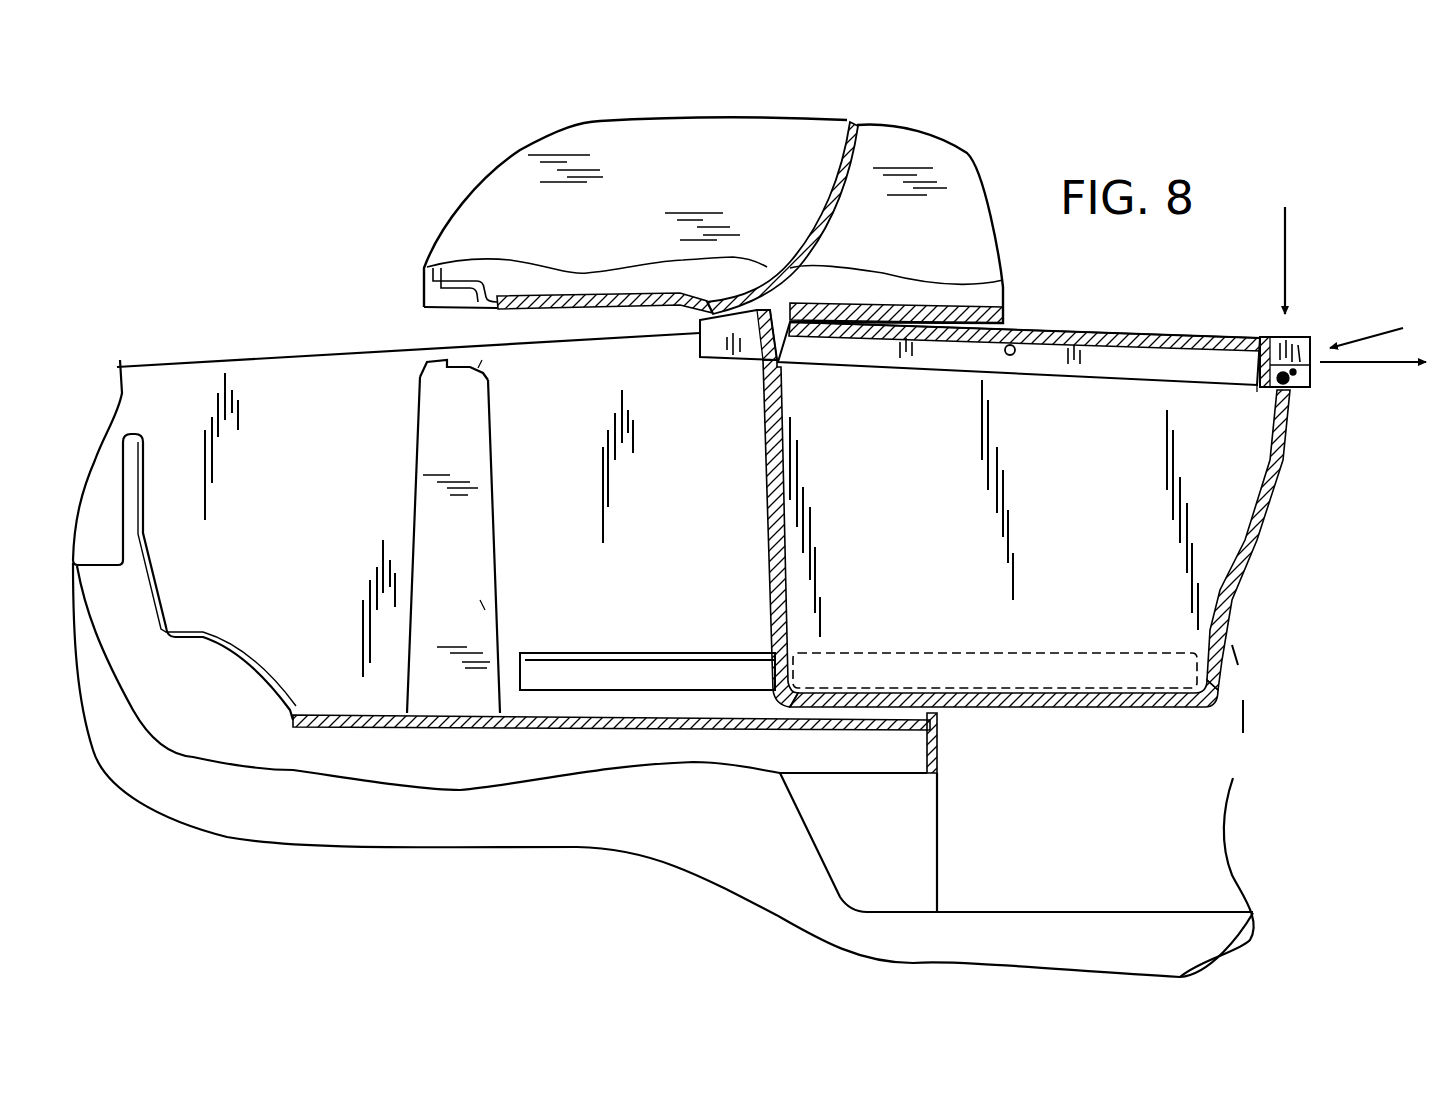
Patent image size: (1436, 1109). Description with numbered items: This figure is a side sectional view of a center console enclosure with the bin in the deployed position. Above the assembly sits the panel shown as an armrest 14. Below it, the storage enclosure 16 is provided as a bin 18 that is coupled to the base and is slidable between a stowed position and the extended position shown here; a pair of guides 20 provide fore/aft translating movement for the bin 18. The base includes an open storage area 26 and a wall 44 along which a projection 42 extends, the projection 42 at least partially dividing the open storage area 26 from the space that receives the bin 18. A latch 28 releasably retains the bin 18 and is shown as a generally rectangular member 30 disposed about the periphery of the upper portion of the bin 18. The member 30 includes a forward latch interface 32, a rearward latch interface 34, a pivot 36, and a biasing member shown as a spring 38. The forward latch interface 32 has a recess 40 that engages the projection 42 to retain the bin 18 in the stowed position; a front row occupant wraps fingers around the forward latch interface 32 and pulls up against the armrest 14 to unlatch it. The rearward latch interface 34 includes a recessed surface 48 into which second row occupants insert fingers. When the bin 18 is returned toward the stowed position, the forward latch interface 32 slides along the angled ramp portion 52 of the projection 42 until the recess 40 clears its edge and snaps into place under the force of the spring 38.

The armrest 14 is at (560, 124).
The storage enclosure 16 is at (1264, 632).
The bin 18 is at (1240, 575).
The guides 20 is at (597, 653).
The open storage area 26 is at (303, 392).
The latch 28 is at (1377, 341).
The member 30 is at (853, 363).
The forward latch interface 32 is at (700, 338).
The rearward latch interface 34 is at (1313, 370).
The pivot 36 is at (1015, 356).
The spring 38 is at (1250, 406).
The recess 40 is at (750, 363).
The projection 42 is at (448, 368).
The wall 44 is at (560, 554).
The recessed surface 48 is at (1293, 340).
The ramp portion 52 is at (480, 367).